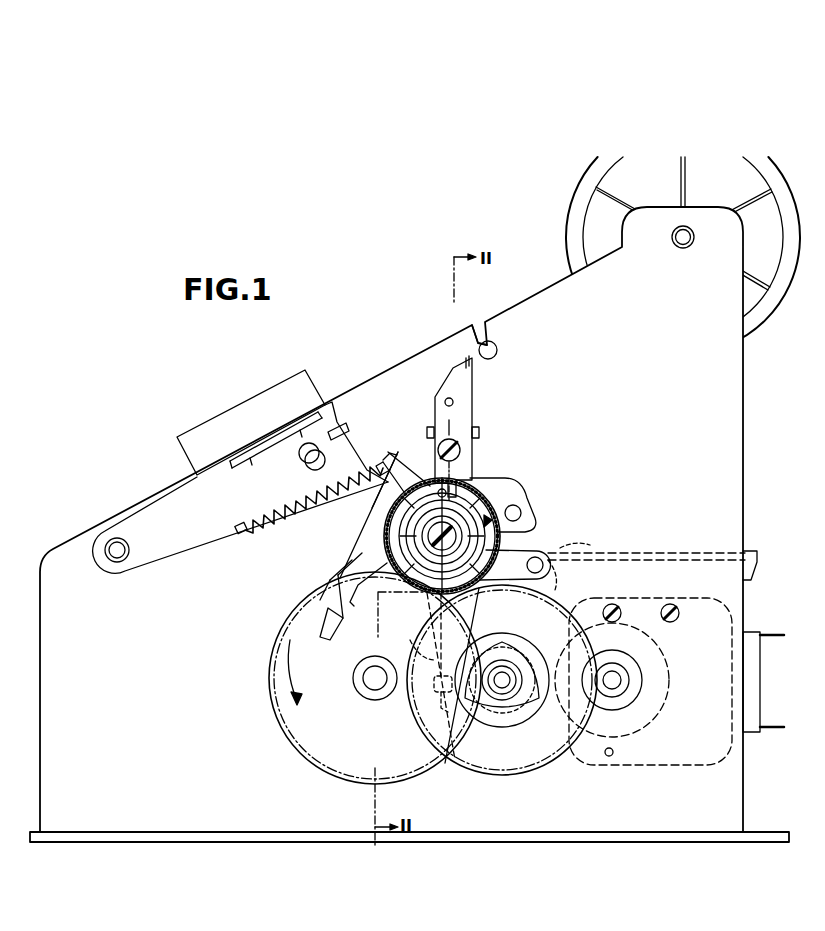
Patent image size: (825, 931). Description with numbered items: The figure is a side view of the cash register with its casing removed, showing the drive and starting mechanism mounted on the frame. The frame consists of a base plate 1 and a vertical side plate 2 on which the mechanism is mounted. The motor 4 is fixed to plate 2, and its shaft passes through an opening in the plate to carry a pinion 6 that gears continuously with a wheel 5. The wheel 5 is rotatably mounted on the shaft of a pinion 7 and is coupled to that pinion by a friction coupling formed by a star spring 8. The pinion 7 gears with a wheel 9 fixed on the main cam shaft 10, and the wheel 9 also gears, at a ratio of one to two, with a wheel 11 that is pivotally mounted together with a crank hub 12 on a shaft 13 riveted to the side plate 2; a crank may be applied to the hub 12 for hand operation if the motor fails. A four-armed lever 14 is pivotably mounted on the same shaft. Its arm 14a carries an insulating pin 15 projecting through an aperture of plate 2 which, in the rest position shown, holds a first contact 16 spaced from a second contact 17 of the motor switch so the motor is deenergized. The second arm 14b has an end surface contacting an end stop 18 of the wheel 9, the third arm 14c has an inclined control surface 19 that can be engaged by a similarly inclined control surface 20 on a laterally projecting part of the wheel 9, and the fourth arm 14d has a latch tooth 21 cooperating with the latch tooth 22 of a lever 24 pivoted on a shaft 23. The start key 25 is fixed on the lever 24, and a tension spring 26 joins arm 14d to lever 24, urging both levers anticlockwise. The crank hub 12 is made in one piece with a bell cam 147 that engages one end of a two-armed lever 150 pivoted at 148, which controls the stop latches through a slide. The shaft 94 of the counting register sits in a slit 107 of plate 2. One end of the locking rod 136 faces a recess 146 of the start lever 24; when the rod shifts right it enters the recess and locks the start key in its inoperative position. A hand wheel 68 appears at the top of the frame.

The base plate 1 is at (762, 840).
The vertical side plate 2 is at (735, 437).
The motor 4 is at (662, 765).
The wheel 5 is at (525, 763).
The pinion 6 is at (625, 680).
The pinion 7 is at (522, 705).
The star spring 8 is at (535, 700).
The wheel 9 is at (318, 762).
The main cam shaft 10 is at (375, 688).
The wheel 11 is at (490, 492).
The crank hub 12 is at (460, 510).
The shaft 13 is at (425, 535).
The four-armed lever 14 is at (368, 498).
The arm of lever 14 14a is at (512, 556).
The second arm of lever 14 14b is at (409, 634).
The third arm of lever 14 14c is at (345, 568).
The fourth arm of lever 14 14d is at (400, 462).
The pin 15 is at (522, 580).
The first contact 16 is at (548, 572).
The second contact 17 is at (562, 555).
The end stop 18 is at (439, 705).
The inclined control surface 19 is at (346, 594).
The inclined control surface 20 is at (326, 616).
The latch tooth 21 is at (386, 456).
The latch tooth 22 is at (369, 487).
The shaft 23 is at (118, 560).
The lever 24 is at (198, 522).
The start key 25 is at (237, 414).
The tension spring 26 is at (290, 505).
The hand wheel 68 is at (760, 316).
The shaft of the counting register 94 is at (498, 350).
The slit 107 is at (478, 325).
The locking rod 136 is at (342, 432).
The recess 146 is at (332, 457).
The bell cam 147 is at (397, 545).
The pivot 148 is at (480, 432).
The two-armed lever 150 is at (462, 410).